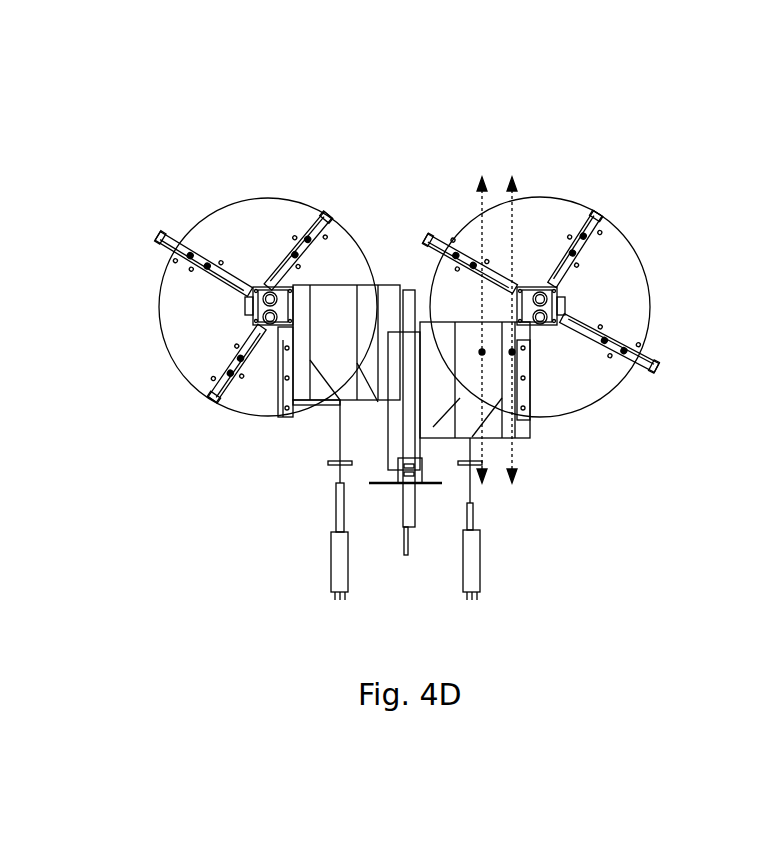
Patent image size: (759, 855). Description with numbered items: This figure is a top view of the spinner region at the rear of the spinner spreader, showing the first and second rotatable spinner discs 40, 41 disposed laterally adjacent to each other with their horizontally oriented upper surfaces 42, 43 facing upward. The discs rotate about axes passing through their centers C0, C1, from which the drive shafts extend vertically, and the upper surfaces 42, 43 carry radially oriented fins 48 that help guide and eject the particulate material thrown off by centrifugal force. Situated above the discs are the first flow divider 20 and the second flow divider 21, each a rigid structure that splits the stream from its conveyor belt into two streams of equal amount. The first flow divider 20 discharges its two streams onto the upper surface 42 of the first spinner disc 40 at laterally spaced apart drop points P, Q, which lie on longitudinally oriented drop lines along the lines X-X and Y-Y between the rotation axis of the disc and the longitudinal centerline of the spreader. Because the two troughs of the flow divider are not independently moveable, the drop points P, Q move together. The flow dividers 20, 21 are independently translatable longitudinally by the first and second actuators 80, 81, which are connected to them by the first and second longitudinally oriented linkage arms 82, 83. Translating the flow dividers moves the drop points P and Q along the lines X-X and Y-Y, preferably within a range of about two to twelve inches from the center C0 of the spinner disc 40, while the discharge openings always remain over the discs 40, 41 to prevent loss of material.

The first rotatable spinner disc 40 is at (649, 268).
The second rotatable spinner disc 41 is at (235, 199).
The upper surface 42 is at (607, 236).
The upper surface 43 is at (205, 232).
The radially oriented fins 48 is at (324, 232).
The center of first spinner disc C0 is at (564, 300).
The center of second spinner disc C1 is at (247, 308).
The first flow divider 20 is at (523, 443).
The second flow divider 21 is at (323, 394).
The first actuator 80 is at (478, 564).
The second actuator 81 is at (337, 565).
The first longitudinally oriented linkage arm 82 is at (463, 490).
The second longitudinally oriented linkage arm 83 is at (337, 479).
The drop point P is at (513, 355).
The drop point Q is at (481, 351).
The line X- X is at (513, 333).
The line Y- Y is at (483, 333).